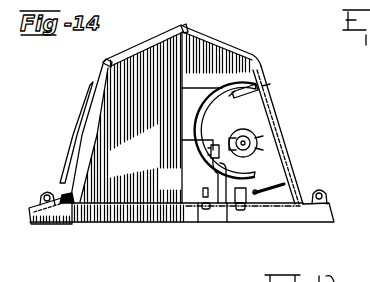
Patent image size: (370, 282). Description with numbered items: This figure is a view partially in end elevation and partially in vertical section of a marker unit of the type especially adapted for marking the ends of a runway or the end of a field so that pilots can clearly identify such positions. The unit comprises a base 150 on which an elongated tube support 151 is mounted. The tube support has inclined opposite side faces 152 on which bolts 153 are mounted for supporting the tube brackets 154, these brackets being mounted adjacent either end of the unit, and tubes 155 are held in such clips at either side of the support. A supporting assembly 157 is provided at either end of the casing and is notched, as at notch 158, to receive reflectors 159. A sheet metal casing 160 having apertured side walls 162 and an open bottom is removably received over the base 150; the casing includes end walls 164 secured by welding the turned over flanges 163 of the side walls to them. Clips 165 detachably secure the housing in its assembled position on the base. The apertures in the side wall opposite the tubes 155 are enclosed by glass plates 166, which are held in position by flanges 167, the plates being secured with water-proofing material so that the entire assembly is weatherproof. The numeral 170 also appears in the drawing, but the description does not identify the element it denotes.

The base 150 is at (206, 216).
The tube support 151 is at (190, 139).
The inclined side faces 152 is at (227, 212).
The bolts 153 is at (210, 151).
The tube brackets 154 is at (262, 149).
The tubes 155 is at (258, 139).
The supporting assembly 157 is at (229, 96).
The notch 158 is at (240, 89).
The reflectors 159 is at (285, 182).
The sheet metal casing 160 is at (151, 43).
The side walls 162 is at (97, 110).
The turned over flanges 163 is at (40, 223).
The end walls 164 is at (99, 220).
The clips 165 is at (41, 197).
The glass plates 166 is at (277, 97).
The flanges 167 is at (262, 88).
The frame 170 is at (356, 248).